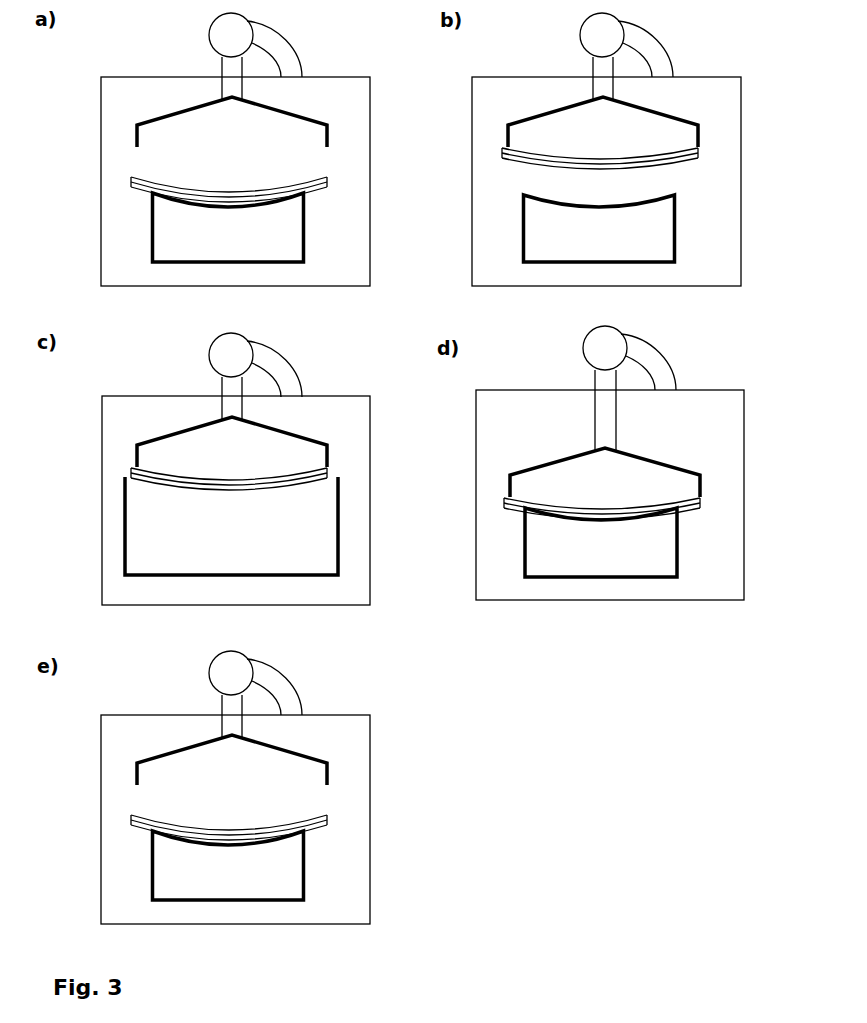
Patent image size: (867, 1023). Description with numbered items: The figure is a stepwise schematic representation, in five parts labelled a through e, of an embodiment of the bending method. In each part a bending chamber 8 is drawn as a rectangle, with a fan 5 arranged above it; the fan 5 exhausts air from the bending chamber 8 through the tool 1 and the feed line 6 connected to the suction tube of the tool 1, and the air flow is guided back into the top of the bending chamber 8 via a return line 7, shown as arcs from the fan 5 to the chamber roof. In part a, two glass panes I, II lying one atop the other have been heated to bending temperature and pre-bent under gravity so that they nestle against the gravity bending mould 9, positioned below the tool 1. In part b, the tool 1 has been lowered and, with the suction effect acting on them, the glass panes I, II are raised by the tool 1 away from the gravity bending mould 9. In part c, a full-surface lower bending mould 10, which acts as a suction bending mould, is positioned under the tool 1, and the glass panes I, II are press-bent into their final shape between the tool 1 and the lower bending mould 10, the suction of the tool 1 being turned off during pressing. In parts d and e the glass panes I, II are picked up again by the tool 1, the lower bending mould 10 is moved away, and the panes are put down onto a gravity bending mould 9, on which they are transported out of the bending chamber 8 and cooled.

The tool 1 is at (273, 108).
The fan 5 is at (228, 37).
The feed line 6 is at (228, 65).
The return line 7 is at (278, 48).
The bending chamber 8 is at (371, 163).
The gravity bending mould 9 is at (303, 240).
The lower bending mould 10 is at (272, 526).
The glass pane I is at (232, 194).
The glass pane II is at (250, 198).